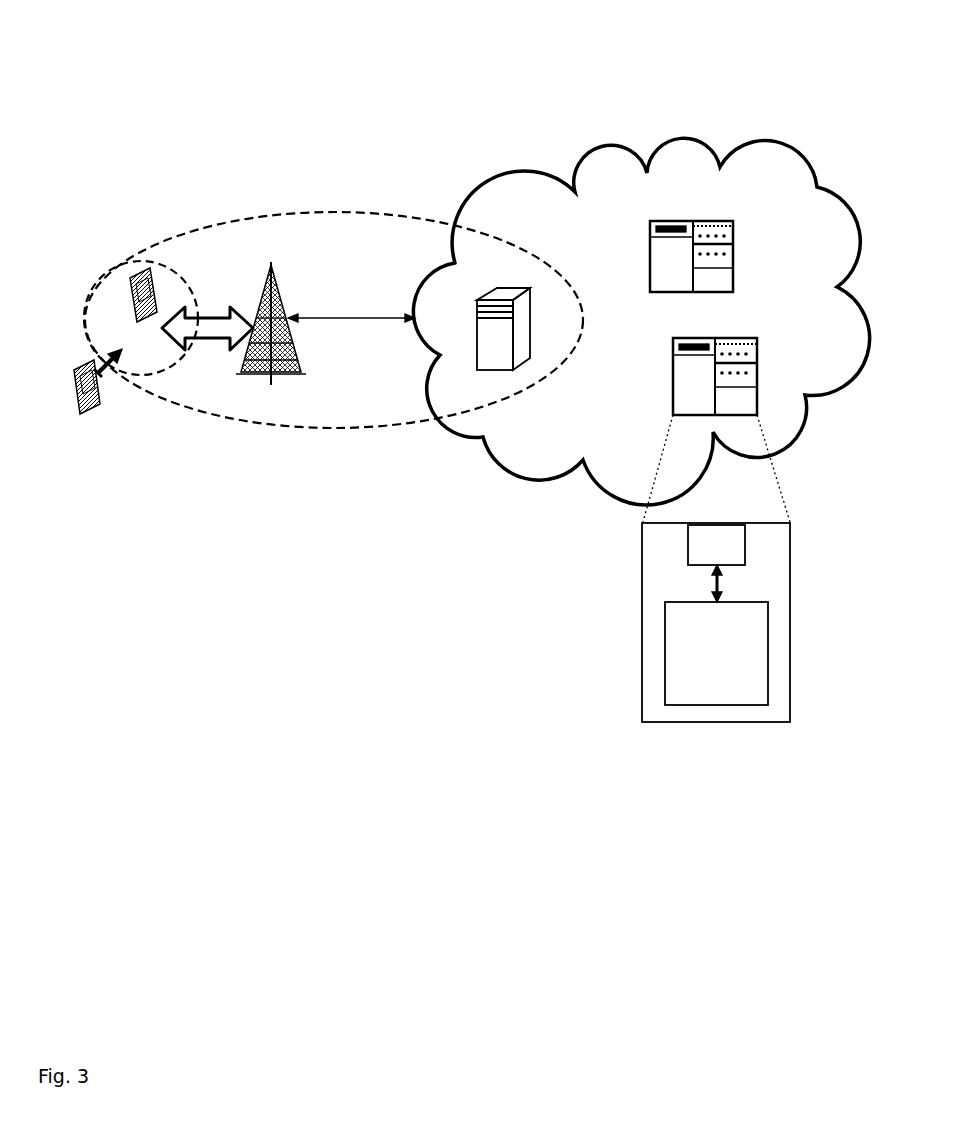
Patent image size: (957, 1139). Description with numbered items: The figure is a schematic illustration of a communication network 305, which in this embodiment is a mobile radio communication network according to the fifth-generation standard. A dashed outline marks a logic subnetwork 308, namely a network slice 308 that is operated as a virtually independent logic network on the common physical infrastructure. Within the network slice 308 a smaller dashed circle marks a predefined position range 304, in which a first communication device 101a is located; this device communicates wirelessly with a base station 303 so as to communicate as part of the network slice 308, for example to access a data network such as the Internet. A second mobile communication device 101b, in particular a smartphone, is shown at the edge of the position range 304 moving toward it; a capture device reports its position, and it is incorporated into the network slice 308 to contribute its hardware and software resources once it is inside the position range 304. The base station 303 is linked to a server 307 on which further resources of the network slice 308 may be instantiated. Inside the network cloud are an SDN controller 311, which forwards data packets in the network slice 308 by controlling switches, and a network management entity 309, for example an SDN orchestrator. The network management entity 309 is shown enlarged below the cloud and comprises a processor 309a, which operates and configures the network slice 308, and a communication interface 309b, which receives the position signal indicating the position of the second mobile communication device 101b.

The communication network 305 is at (254, 82).
The logic subnetwork 308 is at (360, 211).
The predefined position range 304 is at (175, 372).
The first communication device 101a is at (155, 290).
The second mobile communication device 101b is at (100, 396).
The base station 303 is at (278, 291).
The server 307 is at (535, 298).
The SDN controller 311 is at (735, 248).
The network management entity 309 is at (672, 370).
The processor 309a is at (665, 670).
The communication interface 309b is at (688, 540).